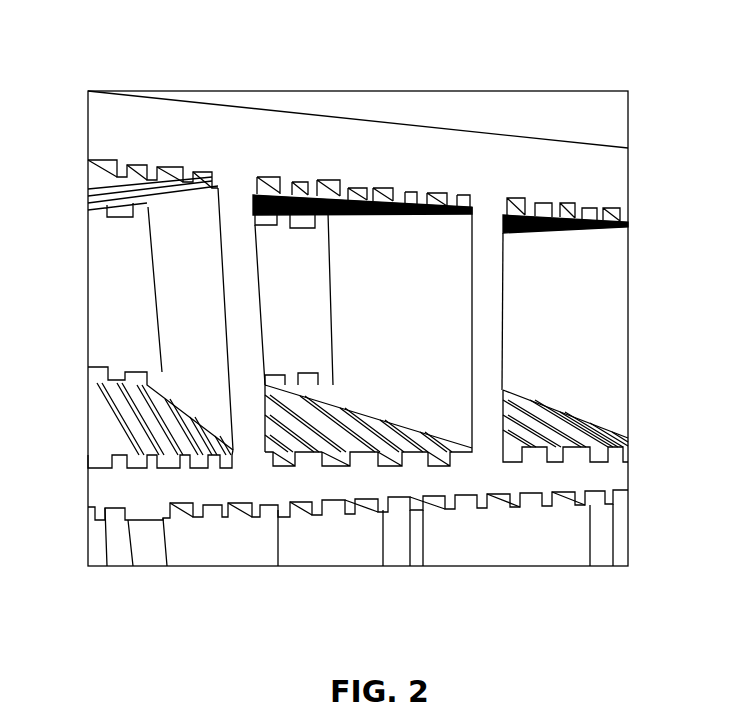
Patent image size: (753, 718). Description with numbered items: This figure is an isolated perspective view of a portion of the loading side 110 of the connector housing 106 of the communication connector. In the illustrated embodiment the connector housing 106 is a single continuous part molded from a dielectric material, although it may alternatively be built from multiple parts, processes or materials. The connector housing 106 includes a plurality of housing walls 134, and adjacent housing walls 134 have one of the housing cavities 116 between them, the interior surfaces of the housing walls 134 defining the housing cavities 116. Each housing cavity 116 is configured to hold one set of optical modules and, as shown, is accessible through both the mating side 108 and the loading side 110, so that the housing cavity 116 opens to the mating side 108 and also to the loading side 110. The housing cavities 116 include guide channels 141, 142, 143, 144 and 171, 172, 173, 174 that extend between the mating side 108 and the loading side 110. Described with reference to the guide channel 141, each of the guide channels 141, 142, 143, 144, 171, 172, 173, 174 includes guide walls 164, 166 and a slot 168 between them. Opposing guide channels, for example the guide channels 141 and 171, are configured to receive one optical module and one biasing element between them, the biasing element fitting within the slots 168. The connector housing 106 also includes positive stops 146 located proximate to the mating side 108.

The connector housing 106 is at (145, 100).
The mating side 108 is at (351, 88).
The loading side 110 is at (478, 172).
The housing cavity 116 is at (437, 247).
The housing wall 134 is at (157, 295).
The guide channel 141 is at (270, 469).
The guide channel 142 is at (324, 469).
The guide channel 143 is at (376, 469).
The guide channel 144 is at (426, 469).
The positive stop 146 is at (305, 230).
The guide wall 164 is at (266, 458).
The guide wall 166 is at (268, 427).
The slot 168 is at (272, 440).
The guide channel 171 is at (250, 173).
The guide channel 172 is at (313, 178).
The guide channel 173 is at (368, 185).
The guide channel 174 is at (423, 190).